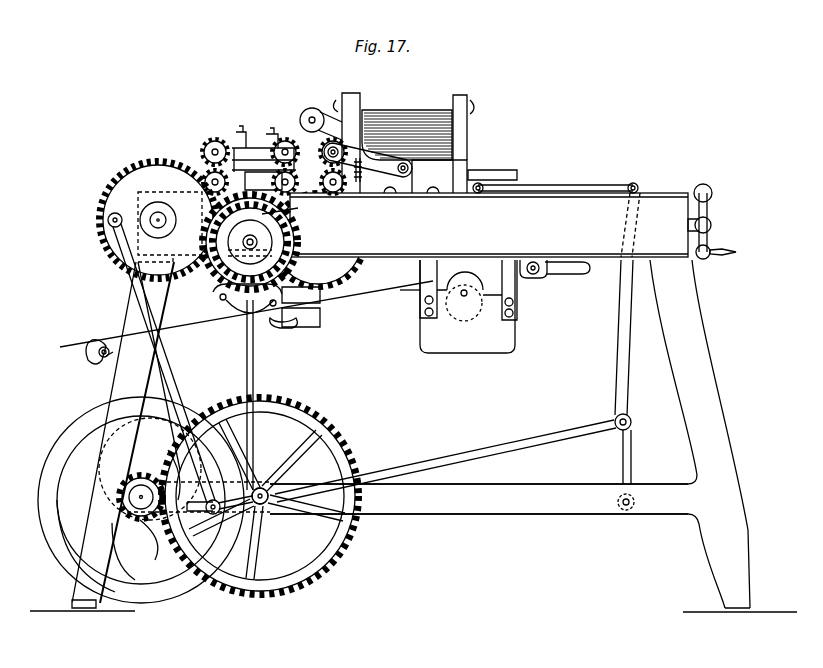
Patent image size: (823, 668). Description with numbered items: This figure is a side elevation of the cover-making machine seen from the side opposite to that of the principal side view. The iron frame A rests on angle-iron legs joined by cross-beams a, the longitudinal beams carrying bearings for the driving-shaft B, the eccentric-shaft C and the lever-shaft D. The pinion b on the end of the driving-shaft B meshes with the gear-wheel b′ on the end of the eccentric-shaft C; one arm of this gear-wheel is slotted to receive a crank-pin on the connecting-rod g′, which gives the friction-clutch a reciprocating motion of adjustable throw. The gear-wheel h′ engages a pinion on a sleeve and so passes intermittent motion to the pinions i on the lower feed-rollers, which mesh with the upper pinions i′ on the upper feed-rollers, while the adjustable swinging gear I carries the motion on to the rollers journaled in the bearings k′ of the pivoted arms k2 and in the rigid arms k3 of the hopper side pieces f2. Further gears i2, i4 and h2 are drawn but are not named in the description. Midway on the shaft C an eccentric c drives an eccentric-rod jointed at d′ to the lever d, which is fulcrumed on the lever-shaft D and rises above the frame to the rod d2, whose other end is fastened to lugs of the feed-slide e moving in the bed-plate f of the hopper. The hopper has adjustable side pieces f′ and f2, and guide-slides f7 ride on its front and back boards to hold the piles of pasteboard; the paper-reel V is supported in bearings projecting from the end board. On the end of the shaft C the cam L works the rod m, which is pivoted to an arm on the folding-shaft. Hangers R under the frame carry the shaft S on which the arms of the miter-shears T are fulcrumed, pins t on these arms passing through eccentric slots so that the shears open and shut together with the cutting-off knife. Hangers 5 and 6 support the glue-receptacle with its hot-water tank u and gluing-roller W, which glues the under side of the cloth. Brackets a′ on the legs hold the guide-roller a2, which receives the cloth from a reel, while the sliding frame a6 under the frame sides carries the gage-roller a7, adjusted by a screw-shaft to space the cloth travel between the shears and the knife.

The pinion i is at (158, 212).
The upper pinion i′ is at (214, 138).
The intermediate gears and frame i2 is at (304, 118).
The gear i4 is at (286, 207).
The gear-wheel h′ is at (285, 232).
The gear h2 is at (298, 242).
The bearing k′ is at (108, 218).
The pivoted arm k2 is at (362, 172).
The rigid arm k3 is at (334, 192).
The paper-reel V is at (305, 104).
The bed-plate f is at (407, 135).
The side piece f′ is at (425, 173).
The side piece f2 is at (368, 137).
The guide-slide f7 is at (468, 80).
The feed-slide e is at (503, 170).
The rod d2 is at (555, 180).
The lever d is at (628, 372).
The joint d′ is at (631, 422).
The eccentric c is at (445, 461).
The cross-beam a is at (407, 498).
The frame A is at (413, 436).
The lever-shaft D is at (626, 510).
The hot-water tank u is at (467, 306).
The hanger 6 is at (428, 289).
The hanger 5 is at (509, 290).
The gluing-roller W is at (409, 295).
The shaft S is at (230, 314).
The hanger R is at (239, 298).
The miter-shears T is at (322, 318).
The pin t is at (300, 340).
The rod m is at (260, 395).
The gage-roller a7 is at (540, 278).
The sliding frame a6 is at (569, 278).
The guide-roller a2 is at (91, 352).
The bracket a′ is at (115, 355).
The connecting-rod g′ is at (173, 367).
The pinion b is at (140, 466).
The driving-shaft B is at (140, 512).
The gear-wheel b′ is at (278, 548).
The eccentric-shaft C is at (264, 505).
The cam L is at (262, 476).
The adjustable swinging gear I is at (318, 240).